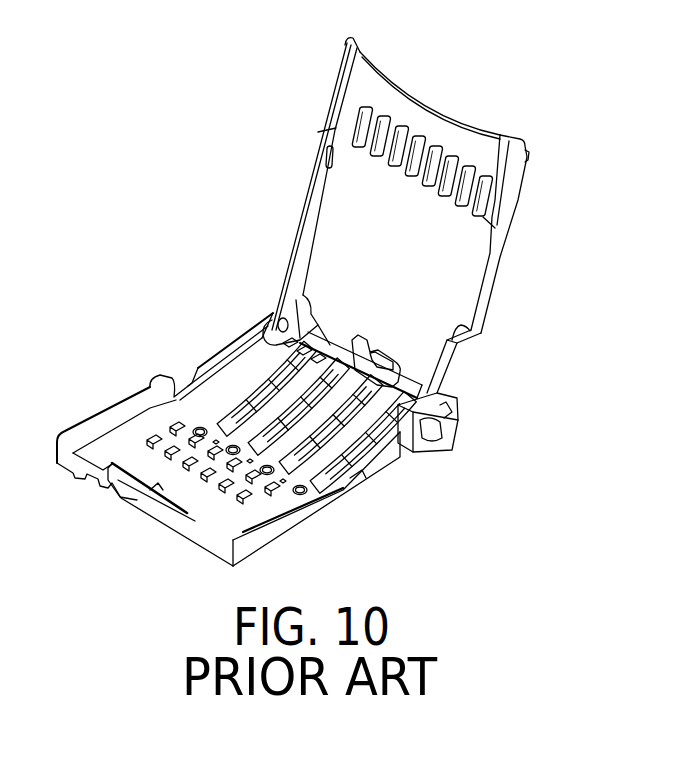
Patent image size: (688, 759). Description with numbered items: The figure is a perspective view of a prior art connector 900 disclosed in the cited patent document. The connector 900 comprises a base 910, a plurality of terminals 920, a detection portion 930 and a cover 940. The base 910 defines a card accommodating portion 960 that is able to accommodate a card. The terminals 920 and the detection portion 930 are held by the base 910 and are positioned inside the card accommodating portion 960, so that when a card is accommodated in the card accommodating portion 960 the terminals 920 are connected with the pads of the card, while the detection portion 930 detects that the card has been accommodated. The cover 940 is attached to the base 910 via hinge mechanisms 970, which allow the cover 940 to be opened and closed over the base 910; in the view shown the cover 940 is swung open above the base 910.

The connector 900 is at (494, 57).
The base 910 is at (133, 400).
The terminals 920 is at (370, 450).
The detection portion 930 is at (328, 340).
The cover 940 is at (440, 288).
The card accommodating portion 960 is at (184, 481).
The hinge mechanisms 970 is at (455, 420).